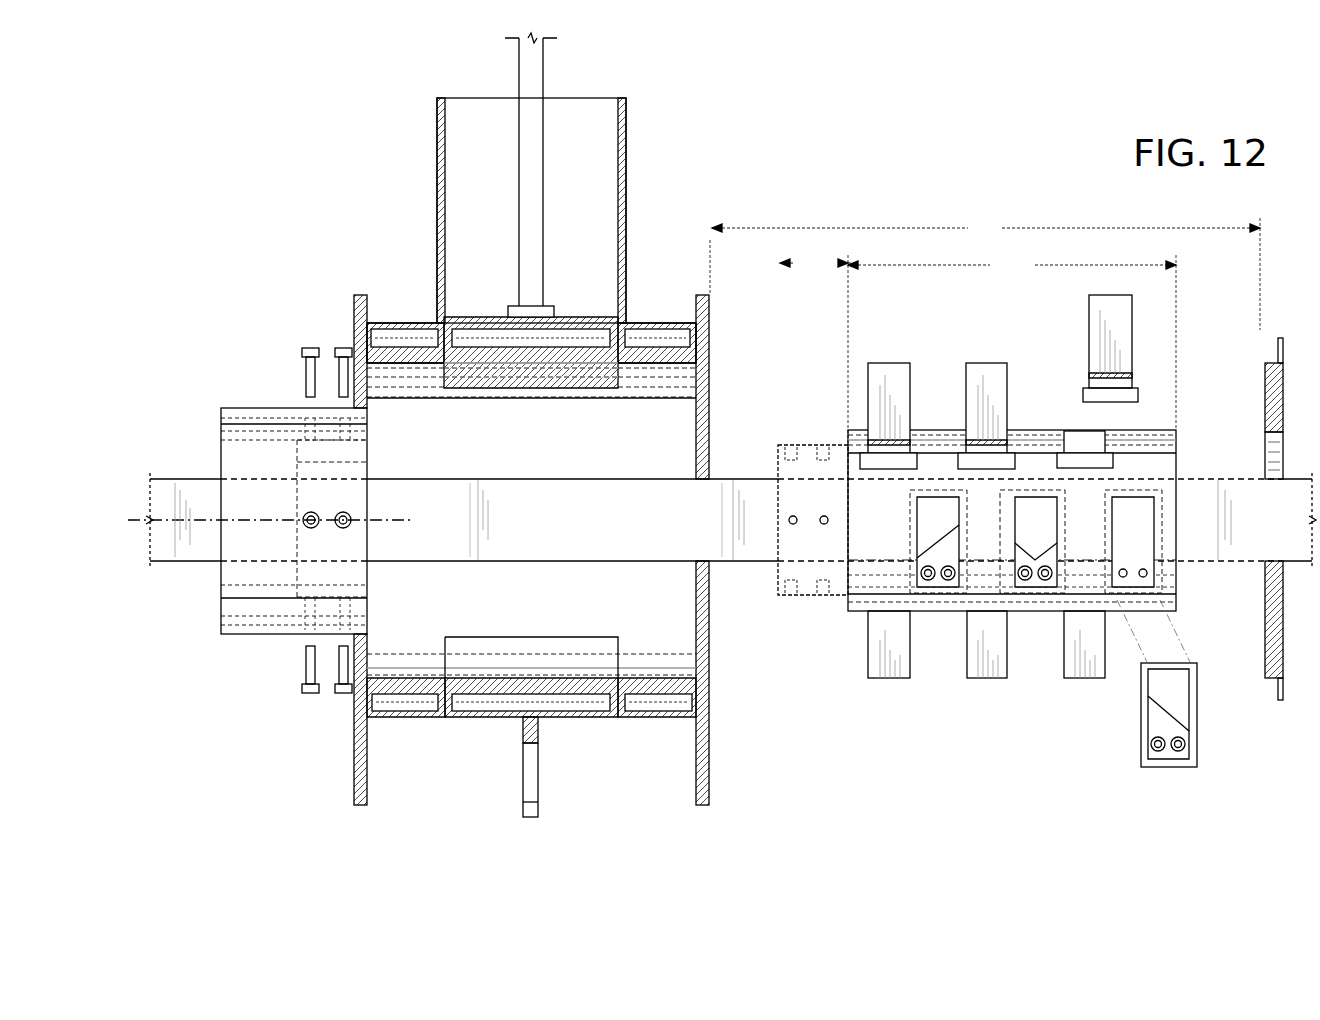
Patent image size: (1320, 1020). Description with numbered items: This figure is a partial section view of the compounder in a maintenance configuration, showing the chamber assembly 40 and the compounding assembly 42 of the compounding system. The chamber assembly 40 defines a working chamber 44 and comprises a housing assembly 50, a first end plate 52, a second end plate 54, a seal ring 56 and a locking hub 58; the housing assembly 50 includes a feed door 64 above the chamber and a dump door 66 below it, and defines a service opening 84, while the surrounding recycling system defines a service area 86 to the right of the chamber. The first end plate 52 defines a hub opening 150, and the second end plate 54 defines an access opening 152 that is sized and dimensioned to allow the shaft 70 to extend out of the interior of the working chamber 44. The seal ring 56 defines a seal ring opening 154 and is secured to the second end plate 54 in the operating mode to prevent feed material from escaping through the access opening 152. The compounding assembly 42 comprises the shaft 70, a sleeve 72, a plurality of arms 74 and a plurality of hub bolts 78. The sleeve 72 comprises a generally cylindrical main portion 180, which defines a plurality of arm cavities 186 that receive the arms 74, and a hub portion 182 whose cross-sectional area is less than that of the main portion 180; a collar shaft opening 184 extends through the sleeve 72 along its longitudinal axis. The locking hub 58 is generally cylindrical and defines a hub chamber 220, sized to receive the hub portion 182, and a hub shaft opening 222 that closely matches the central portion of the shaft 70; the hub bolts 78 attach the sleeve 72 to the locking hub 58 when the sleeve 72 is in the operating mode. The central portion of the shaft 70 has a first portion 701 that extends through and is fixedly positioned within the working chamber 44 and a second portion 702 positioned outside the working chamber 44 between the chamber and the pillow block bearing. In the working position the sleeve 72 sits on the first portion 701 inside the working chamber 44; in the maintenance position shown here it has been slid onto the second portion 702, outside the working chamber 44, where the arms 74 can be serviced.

The chamber assembly 40 is at (411, 320).
The compounding assembly 42 is at (1184, 607).
The working chamber 44 is at (546, 449).
The housing assembly 50 is at (425, 720).
The first end plate 52 is at (358, 775).
The second end plate 54 is at (704, 770).
The seal ring 56 is at (1272, 398).
The locking hub 58 is at (230, 405).
The feed door 64 is at (500, 322).
The dump door 66 is at (577, 717).
The shaft 70 is at (648, 497).
The sleeve 72 is at (1150, 440).
The arms 74 is at (975, 375).
The hub bolts 78 is at (338, 348).
The service opening 84 is at (717, 632).
The service area 86 is at (985, 273).
The hub opening 150 is at (368, 398).
The access opening 152 is at (702, 360).
The seal ring opening 154 is at (1272, 445).
The main portion 180 is at (1012, 349).
The hub portion 182 is at (819, 263).
The collar shaft opening 184 is at (800, 555).
The arm cavities 186 is at (1080, 440).
The hub chamber 220 is at (300, 463).
The hub shaft opening 222 is at (218, 555).
The first portion 701 is at (508, 500).
The second portion 702 is at (718, 479).